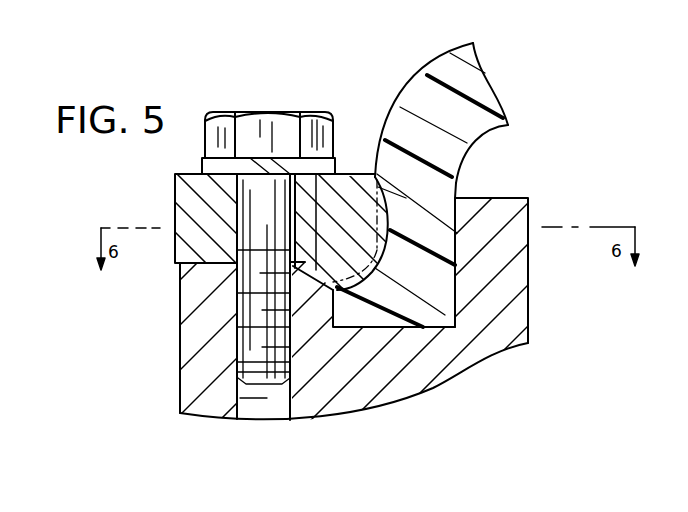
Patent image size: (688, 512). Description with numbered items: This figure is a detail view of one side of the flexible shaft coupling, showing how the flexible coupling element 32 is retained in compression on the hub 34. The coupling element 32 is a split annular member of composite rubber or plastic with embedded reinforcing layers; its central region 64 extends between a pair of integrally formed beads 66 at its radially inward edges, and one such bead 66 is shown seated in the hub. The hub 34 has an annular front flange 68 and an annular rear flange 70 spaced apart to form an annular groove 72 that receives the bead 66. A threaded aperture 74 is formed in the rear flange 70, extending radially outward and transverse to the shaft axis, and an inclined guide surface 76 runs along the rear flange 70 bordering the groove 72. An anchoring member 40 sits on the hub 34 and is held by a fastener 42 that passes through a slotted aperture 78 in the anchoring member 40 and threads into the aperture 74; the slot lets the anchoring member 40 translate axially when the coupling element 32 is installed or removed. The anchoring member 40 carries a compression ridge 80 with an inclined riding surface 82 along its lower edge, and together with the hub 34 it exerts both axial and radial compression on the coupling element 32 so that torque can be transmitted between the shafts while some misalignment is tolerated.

The coupling element 32 is at (500, 143).
The hub 34 is at (443, 372).
The anchoring member 40 is at (186, 173).
The fastener 42 is at (277, 127).
The central region 64 is at (490, 97).
The bead 66 is at (437, 282).
The front flange 68 is at (529, 252).
The rear flange 70 is at (194, 335).
The groove 72 is at (378, 330).
The threaded aperture 74 is at (237, 293).
The inclined guide surface 76 is at (311, 310).
The aperture 78 is at (305, 210).
The compression ridge 80 is at (400, 196).
The inclined riding surface 82 is at (325, 282).